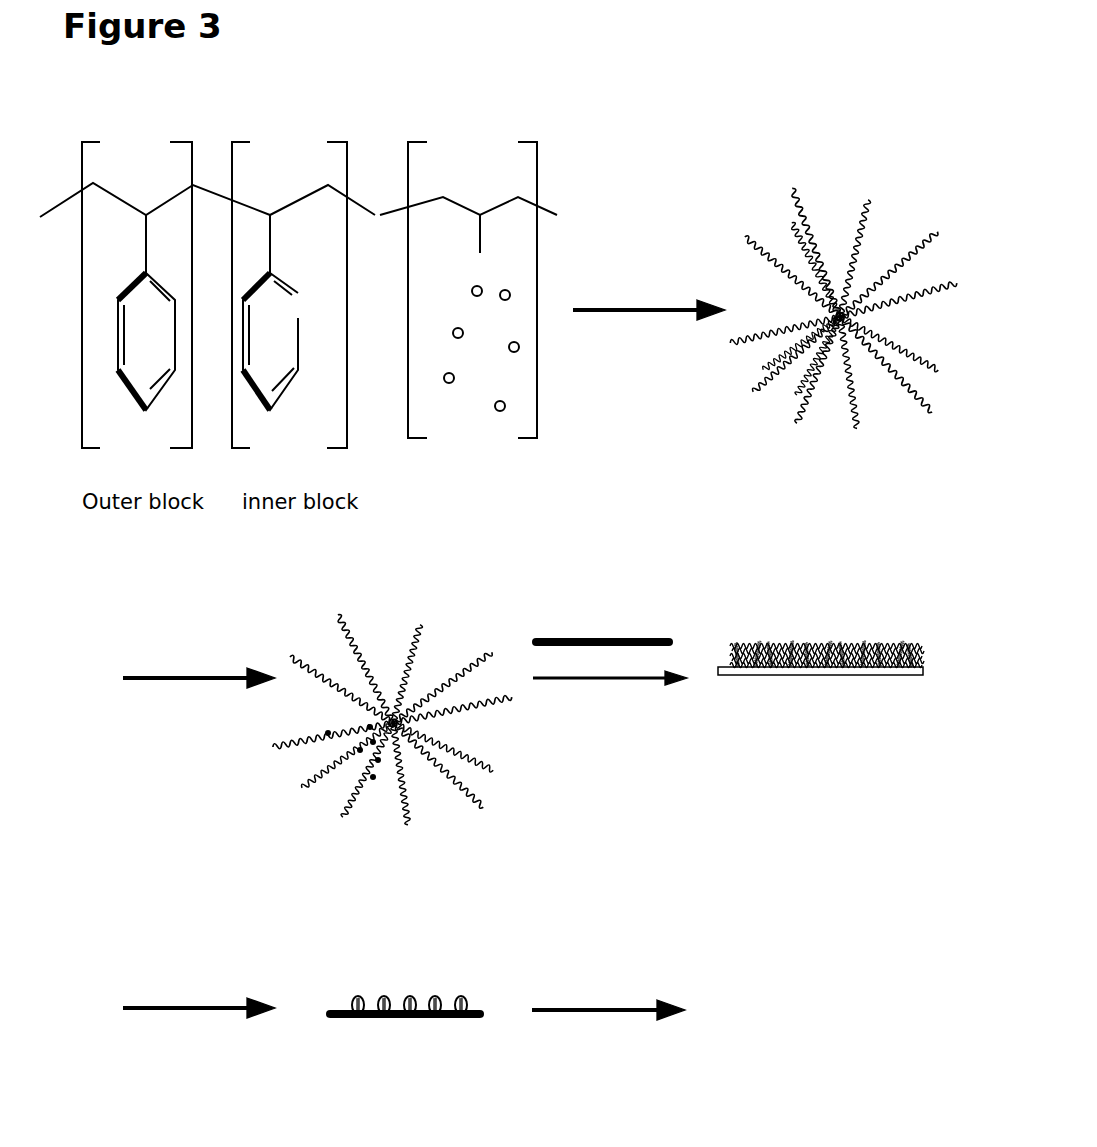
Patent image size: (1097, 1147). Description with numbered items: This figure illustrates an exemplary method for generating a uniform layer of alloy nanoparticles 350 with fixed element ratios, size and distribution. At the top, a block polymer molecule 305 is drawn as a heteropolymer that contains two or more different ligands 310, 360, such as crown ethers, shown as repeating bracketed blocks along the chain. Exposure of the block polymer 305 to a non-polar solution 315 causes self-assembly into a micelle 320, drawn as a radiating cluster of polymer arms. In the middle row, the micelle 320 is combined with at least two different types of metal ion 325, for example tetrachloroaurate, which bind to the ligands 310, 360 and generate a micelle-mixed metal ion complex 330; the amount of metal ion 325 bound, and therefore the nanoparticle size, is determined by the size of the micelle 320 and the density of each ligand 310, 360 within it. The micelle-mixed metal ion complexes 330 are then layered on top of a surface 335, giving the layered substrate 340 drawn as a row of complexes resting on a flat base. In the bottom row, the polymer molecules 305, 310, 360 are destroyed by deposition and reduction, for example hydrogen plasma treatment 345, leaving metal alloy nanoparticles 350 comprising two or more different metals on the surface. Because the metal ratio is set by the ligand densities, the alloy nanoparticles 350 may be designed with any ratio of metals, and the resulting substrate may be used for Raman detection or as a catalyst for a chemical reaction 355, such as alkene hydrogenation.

The block polymer molecule 305 is at (155, 280).
The ligand 310 is at (304, 280).
The ligand 360 is at (472, 279).
The non-polar solution 315 is at (649, 291).
The micelle 320 is at (844, 270).
The metal ion 325 is at (199, 666).
The micelle-mixed metal ion complex 330 is at (392, 752).
The surface 335 is at (610, 631).
The substrate coated with micelles 340 is at (821, 683).
The hydrogen plasma treatment 345 is at (199, 985).
The alloy nanoparticles 350 is at (405, 1038).
The catalyst reaction 355 is at (608, 991).